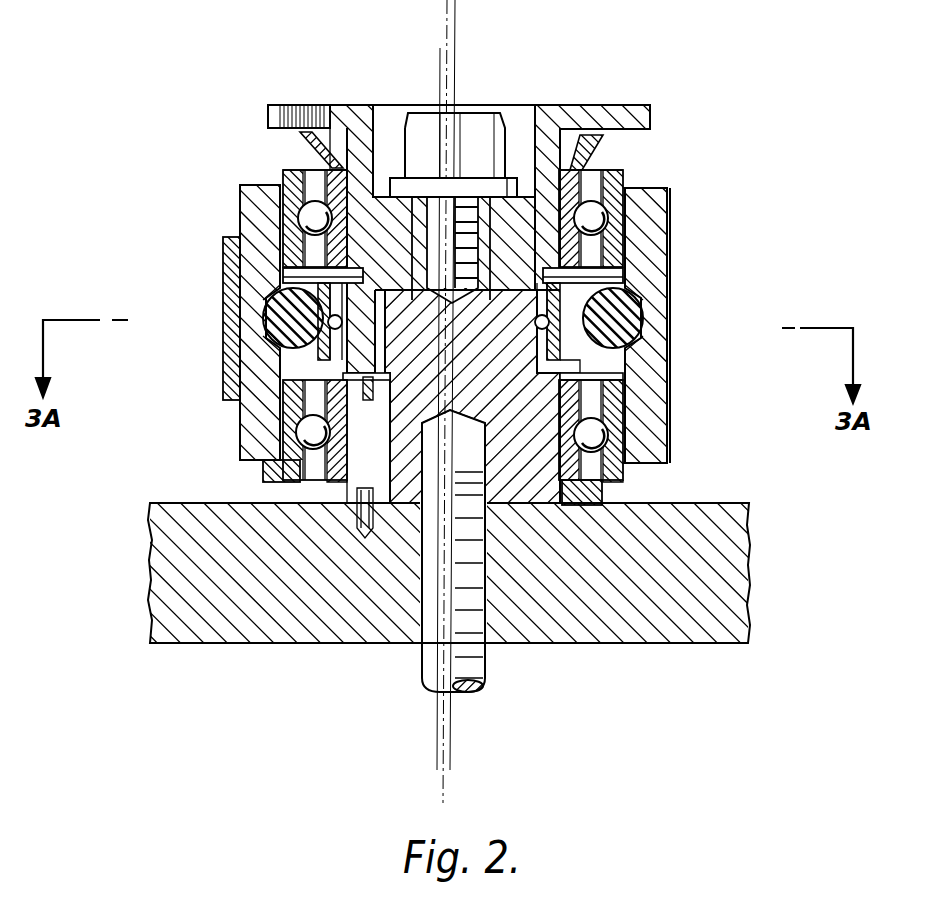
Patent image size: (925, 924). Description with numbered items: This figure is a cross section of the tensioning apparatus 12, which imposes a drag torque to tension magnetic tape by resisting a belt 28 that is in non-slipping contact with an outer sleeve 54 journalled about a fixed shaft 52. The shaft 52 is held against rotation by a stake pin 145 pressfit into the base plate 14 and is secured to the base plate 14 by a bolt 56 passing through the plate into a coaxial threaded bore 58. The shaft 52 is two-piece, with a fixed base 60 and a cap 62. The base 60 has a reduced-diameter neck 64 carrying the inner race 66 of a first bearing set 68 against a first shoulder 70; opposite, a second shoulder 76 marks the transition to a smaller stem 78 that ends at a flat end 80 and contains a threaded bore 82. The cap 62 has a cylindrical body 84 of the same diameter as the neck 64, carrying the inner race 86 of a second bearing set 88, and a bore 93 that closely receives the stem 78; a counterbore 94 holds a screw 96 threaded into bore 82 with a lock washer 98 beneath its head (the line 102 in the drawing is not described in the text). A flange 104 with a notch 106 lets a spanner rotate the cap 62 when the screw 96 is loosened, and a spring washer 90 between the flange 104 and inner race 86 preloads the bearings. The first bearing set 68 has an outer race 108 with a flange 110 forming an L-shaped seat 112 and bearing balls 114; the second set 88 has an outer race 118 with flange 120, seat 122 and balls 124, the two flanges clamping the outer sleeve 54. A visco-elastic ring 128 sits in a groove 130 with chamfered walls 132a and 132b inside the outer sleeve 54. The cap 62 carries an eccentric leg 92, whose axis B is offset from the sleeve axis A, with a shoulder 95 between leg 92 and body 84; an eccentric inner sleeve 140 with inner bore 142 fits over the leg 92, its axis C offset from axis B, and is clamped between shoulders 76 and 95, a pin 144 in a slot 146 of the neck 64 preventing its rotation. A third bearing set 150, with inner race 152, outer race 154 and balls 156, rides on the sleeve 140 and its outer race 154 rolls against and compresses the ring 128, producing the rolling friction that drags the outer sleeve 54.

The tensioning apparatus 12 is at (296, 68).
The base plate 14 is at (222, 645).
The belt 28 is at (240, 240).
The fixed shaft 52 is at (503, 508).
The outer sleeve 54 is at (667, 192).
The bolt 56 is at (478, 693).
The coaxial threaded bore 58 is at (490, 608).
The fixed base 60 is at (613, 645).
The cap 62 is at (562, 105).
The neck 64 is at (346, 433).
The inner race 66 is at (327, 484).
The first bearing set 68 is at (240, 484).
The first shoulder 70 is at (601, 500).
The second shoulder 76 is at (508, 399).
The stem 78 is at (463, 412).
The flat end 80 is at (568, 160).
The threaded coaxial bore 82 is at (563, 247).
The cylindrical body 84 is at (667, 250).
The inner race 86 is at (592, 170).
The second bearing set 88 is at (250, 147).
The spring washer 90 is at (300, 140).
The leg 92 is at (498, 330).
The bore 93 is at (397, 176).
The counterbore 94 is at (494, 185).
The shoulder 95 is at (262, 262).
The screw 96 is at (430, 145).
The lock washer 98 is at (476, 185).
The head axis line 102 is at (465, 113).
The flange 104 is at (646, 105).
The notch 106 is at (278, 104).
The outer race 108 is at (668, 448).
The flange 110 is at (640, 485).
The L-shaped seat 112 is at (628, 470).
The bearing balls 114 is at (283, 447).
The outer race 118 is at (283, 218).
The flange 120 is at (330, 162).
The L-shaped seat 122 is at (300, 200).
The bearing balls 124 is at (604, 217).
The visco-elastic ring 128 is at (545, 352).
The groove 130 is at (622, 325).
The chamfered wall 132a is at (592, 372).
The chamfered wall 132b is at (640, 300).
The inner eccentric sleeve 140 is at (240, 371).
The inner bore 142 is at (240, 345).
The pin 144 is at (290, 419).
The stake pin 145 is at (362, 540).
The slot 146 is at (241, 393).
The third bearing set 150 is at (641, 414).
The inner race 152 is at (572, 376).
The outer race 154 is at (632, 396).
The bearing balls 156 is at (232, 298).
The axis A is at (452, 758).
The axis B is at (442, 780).
The axis C is at (437, 730).